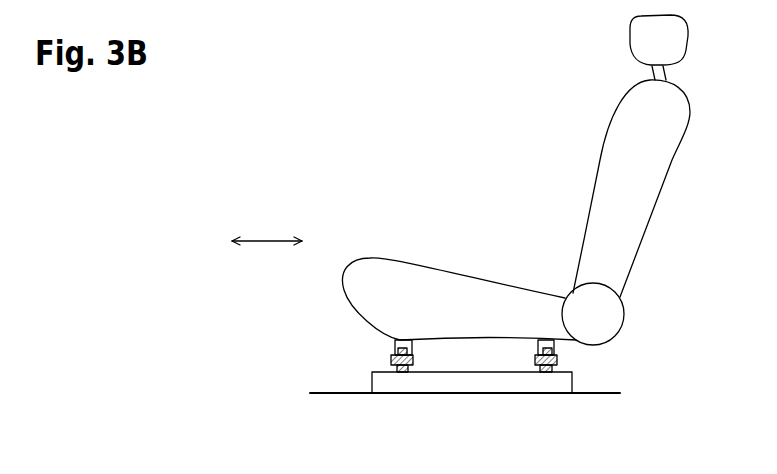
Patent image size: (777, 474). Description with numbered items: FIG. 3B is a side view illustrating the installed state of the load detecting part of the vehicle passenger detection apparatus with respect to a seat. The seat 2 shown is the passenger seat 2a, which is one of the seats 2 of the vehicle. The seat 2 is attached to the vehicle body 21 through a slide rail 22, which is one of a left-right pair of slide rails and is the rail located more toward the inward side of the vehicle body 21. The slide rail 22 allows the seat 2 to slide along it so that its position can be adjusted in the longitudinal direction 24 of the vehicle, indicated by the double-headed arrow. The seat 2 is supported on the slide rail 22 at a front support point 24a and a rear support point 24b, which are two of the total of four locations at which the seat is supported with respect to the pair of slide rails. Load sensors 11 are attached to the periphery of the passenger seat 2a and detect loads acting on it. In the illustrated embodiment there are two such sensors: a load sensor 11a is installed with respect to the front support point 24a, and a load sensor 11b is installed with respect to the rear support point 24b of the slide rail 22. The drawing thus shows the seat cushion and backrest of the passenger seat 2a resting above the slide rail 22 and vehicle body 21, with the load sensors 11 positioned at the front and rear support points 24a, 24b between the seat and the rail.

The seat 2 is at (516, 180).
The passenger seat 2a is at (463, 274).
The load sensors 11 is at (464, 335).
The load sensor 11a is at (341, 325).
The load sensor 11b is at (623, 355).
The vehicle body 21 is at (338, 393).
The slide rail 22 is at (427, 383).
The longitudinal direction 24 is at (267, 229).
The front support point 24a is at (391, 356).
The rear support point 24b is at (558, 356).